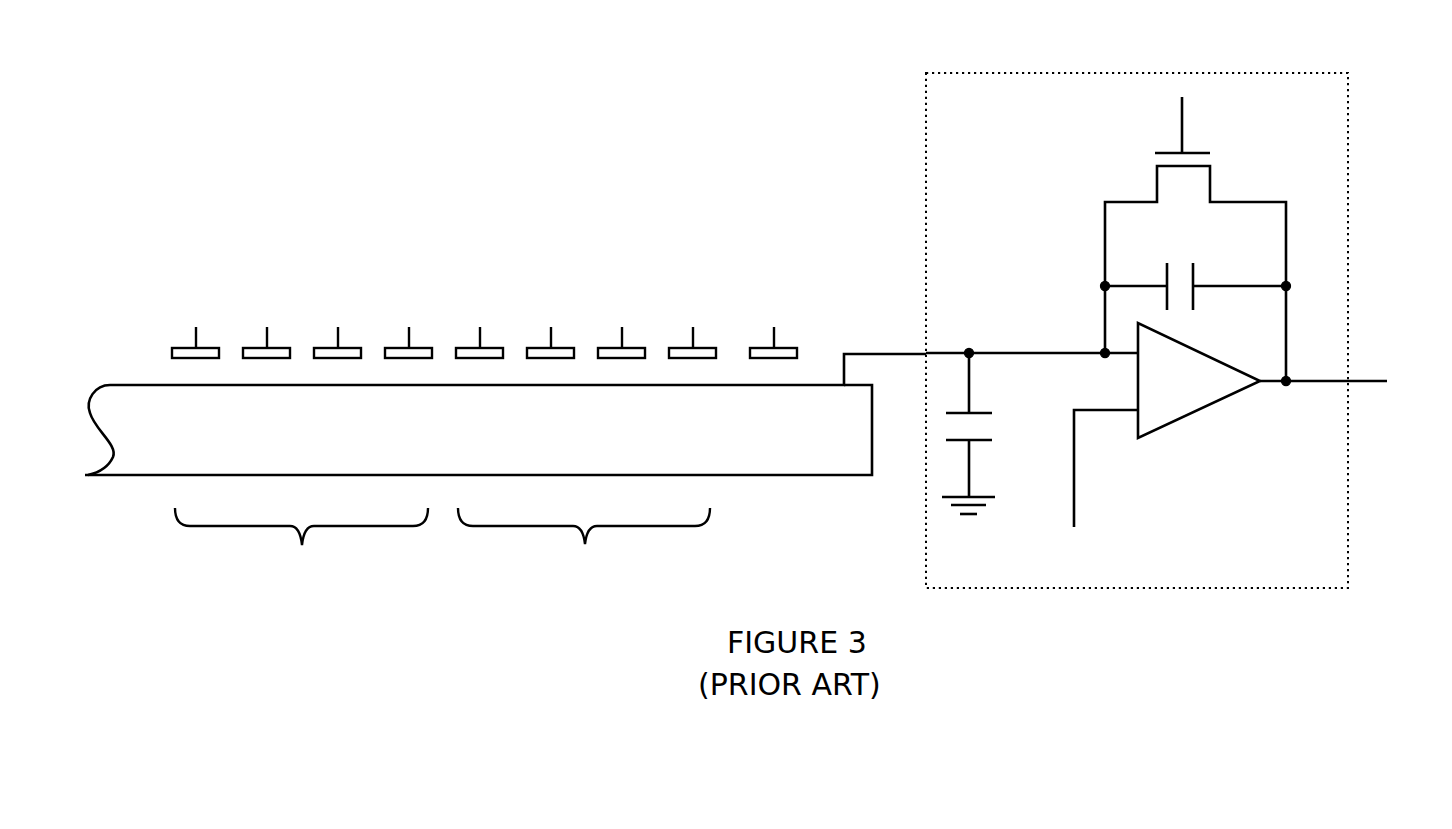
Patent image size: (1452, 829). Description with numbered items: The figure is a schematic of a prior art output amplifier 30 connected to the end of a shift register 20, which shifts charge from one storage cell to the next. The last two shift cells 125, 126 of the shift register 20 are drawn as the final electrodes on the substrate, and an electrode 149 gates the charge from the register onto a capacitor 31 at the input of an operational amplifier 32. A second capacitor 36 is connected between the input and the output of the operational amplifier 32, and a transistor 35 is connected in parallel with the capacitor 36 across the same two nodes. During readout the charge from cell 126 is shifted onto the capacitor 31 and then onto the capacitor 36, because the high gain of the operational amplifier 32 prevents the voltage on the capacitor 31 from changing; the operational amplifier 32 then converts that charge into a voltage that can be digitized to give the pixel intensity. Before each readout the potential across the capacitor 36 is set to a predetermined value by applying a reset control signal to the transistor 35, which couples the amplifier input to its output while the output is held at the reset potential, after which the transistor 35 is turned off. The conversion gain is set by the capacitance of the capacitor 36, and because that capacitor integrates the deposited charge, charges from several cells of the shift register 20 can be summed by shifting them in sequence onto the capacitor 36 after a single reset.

The shift register 20 is at (130, 465).
The electrode 149 is at (748, 349).
The shift cell 125 is at (301, 549).
The shift cell 126 is at (584, 549).
The output amplifier 30 is at (1348, 503).
The capacitor 31 is at (975, 441).
The operational amplifier 32 is at (1198, 408).
The transistor 35 is at (1157, 165).
The capacitor 36 is at (1193, 273).